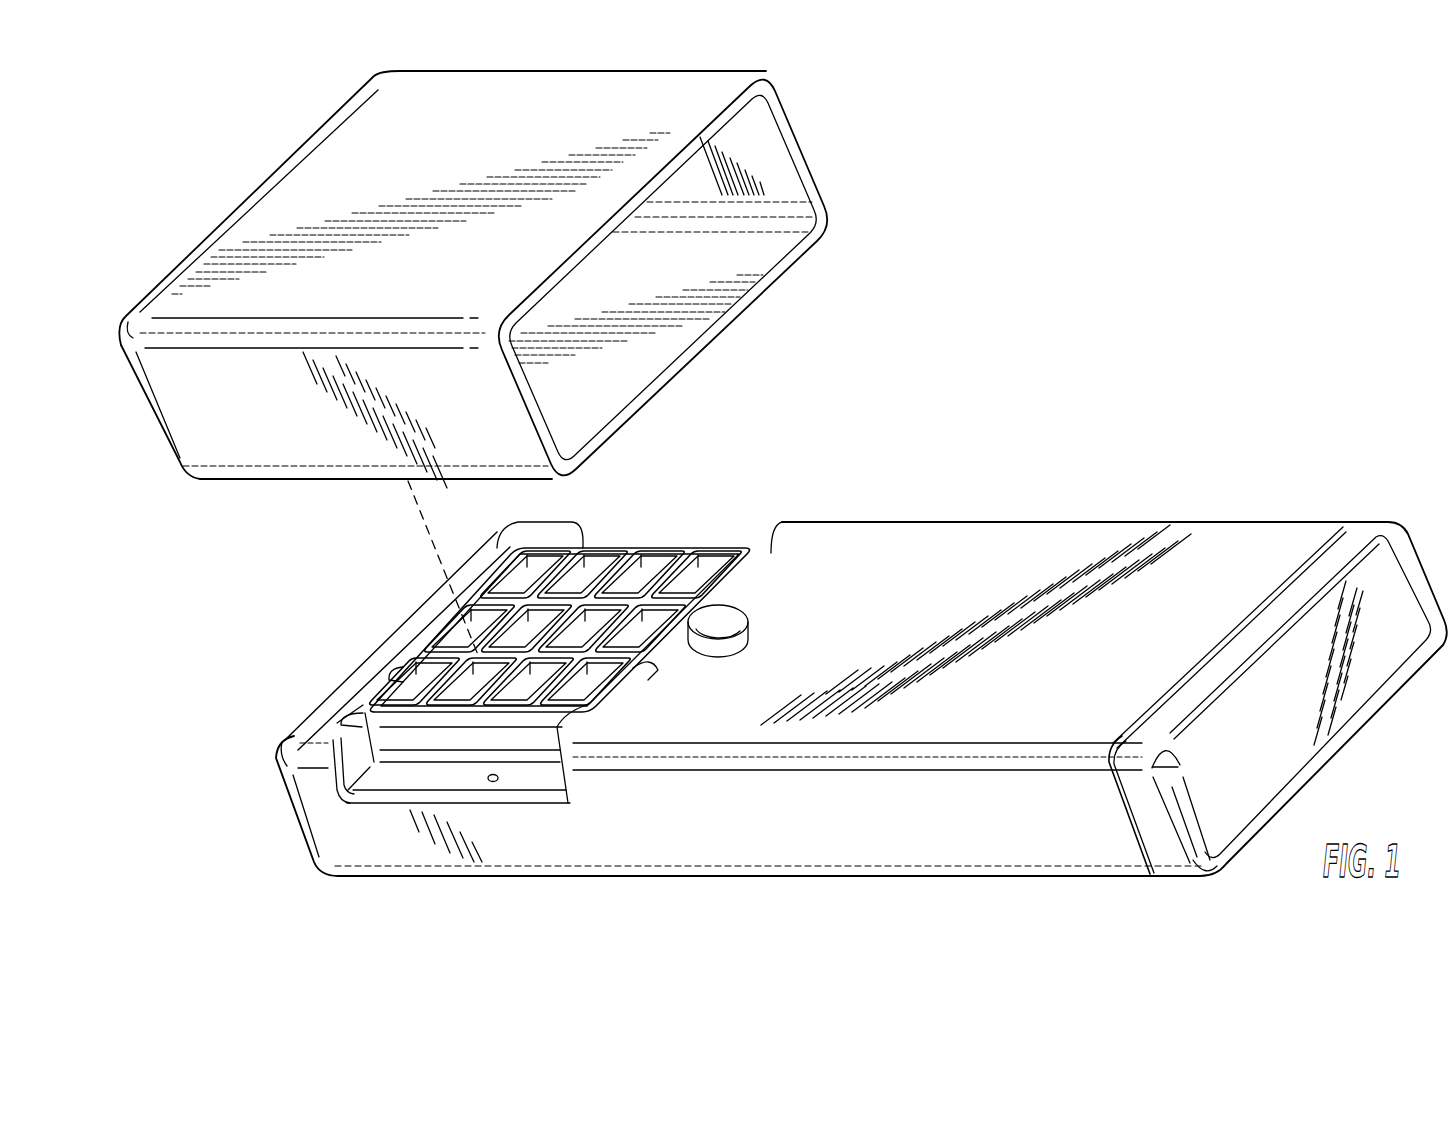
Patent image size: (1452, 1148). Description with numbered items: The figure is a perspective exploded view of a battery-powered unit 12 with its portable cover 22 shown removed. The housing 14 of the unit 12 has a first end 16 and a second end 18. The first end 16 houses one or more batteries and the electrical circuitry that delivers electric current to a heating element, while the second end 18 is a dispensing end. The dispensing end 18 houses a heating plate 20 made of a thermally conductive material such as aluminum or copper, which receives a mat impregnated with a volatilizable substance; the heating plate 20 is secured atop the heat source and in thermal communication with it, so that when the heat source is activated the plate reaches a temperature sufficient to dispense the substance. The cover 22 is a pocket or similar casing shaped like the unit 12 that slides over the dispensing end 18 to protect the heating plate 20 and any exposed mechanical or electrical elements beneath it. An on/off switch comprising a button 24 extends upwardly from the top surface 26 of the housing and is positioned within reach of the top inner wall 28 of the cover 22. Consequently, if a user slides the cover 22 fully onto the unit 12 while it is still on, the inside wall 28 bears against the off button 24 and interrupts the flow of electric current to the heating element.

The battery-powered unit 12 is at (1166, 368).
The housing 14 is at (1262, 538).
The first end 16 is at (1135, 848).
The second end 18 is at (538, 838).
The heating plate 20 is at (490, 783).
The cover 22 is at (343, 147).
The on/off button 24 is at (718, 616).
The top surface 26 is at (877, 703).
The top inner wall 28 is at (753, 155).